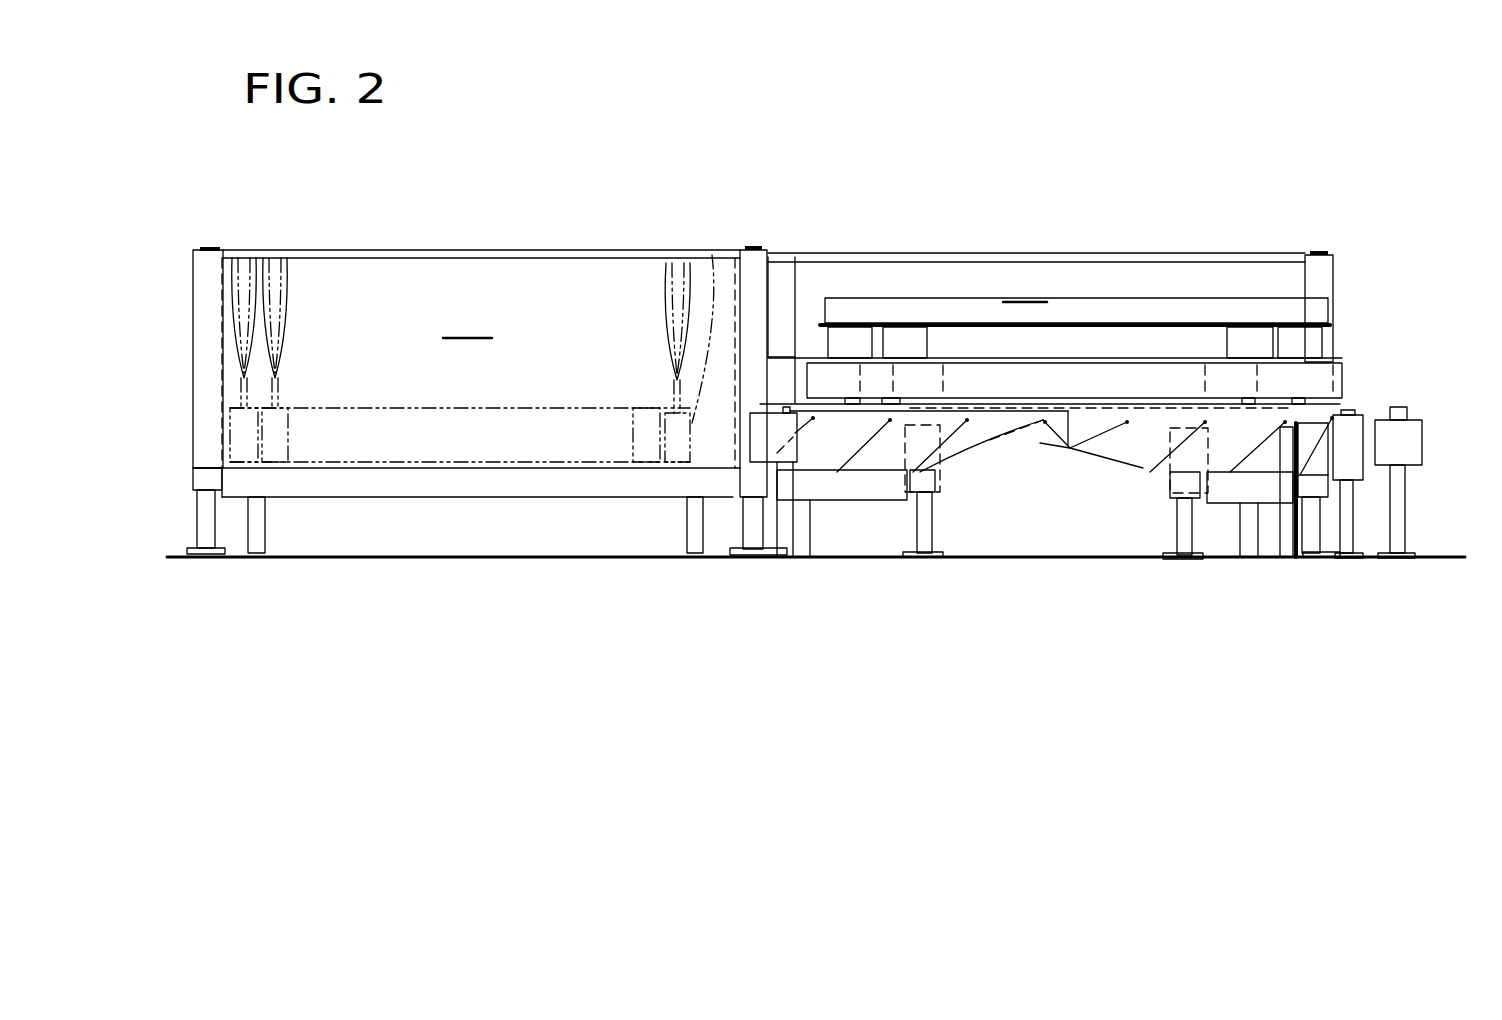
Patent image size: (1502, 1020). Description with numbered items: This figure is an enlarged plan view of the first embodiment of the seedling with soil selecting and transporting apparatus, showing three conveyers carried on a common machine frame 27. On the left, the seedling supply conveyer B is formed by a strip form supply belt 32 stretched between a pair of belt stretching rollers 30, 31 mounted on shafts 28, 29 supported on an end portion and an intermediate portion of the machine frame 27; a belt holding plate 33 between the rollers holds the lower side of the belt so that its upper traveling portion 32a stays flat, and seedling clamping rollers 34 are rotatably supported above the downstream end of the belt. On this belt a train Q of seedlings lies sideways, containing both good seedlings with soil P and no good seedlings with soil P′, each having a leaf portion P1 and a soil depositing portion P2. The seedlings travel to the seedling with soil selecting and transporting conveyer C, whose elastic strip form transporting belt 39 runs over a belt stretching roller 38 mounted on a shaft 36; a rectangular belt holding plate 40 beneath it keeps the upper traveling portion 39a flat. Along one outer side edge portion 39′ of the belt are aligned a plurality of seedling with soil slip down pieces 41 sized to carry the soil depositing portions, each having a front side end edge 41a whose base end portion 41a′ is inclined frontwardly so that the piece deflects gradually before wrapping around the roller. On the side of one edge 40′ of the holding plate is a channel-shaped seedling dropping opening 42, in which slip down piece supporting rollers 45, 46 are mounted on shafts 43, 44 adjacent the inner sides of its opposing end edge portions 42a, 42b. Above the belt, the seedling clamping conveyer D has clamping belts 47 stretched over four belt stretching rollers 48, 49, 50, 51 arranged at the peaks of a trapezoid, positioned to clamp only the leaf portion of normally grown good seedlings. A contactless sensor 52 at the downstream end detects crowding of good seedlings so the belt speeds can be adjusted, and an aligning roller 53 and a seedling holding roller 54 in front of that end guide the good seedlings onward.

The machine frame 27 is at (1046, 424).
The shaft 28 is at (203, 527).
The shaft 29 is at (740, 513).
The belt stretching roller 30 is at (210, 250).
The belt stretching roller 31 is at (757, 250).
The strip form supply belt 32 is at (466, 370).
The upper traveling portion 32a is at (562, 320).
The belt holding plate 33 is at (556, 487).
The seedling clamping rollers 34 is at (787, 423).
The shaft 36 is at (1313, 540).
The belt stretching roller 38 is at (1313, 490).
The strip form transporting belt 39 is at (1075, 309).
The upper traveling portion 39a is at (1205, 298).
The outer side edge portion 39′ is at (883, 477).
The belt holding plate 40 is at (842, 493).
The edge 40′ is at (858, 502).
The seedling with soil slip down pieces 41 is at (827, 447).
The front side end edge 41a is at (1018, 440).
The base end portion 41a′ is at (1070, 450).
The seedling dropping opening 42 is at (1073, 457).
The end edge portion 42a is at (905, 488).
The end edge portion 42b is at (1228, 447).
The shaft 43 is at (920, 527).
The shaft 44 is at (1183, 540).
The slip down piece supporting roller 45 is at (937, 493).
The slip down piece supporting roller 46 is at (1168, 480).
The clamping belts 47 is at (1078, 373).
The belt stretching roller 48 is at (933, 377).
The belt stretching roller 49 is at (1257, 393).
The belt stretching roller 50 is at (1290, 387).
The belt stretching roller 51 is at (805, 370).
The contactless sensor 52 is at (1288, 450).
The aligning roller 53 is at (1357, 427).
The seedling holding roller 54 is at (1403, 450).
The seedling supply conveyer B is at (467, 247).
The seedling with soil selecting and transporting conveyer C is at (1167, 253).
The seedling clamping conveyer D is at (1040, 355).
The good seedlings with soil P is at (233, 470).
The leaf portion P1 is at (712, 255).
The soil depositing portion P2 is at (673, 262).
The no good seedlings with soil P′ is at (645, 452).
The train Q is at (275, 683).